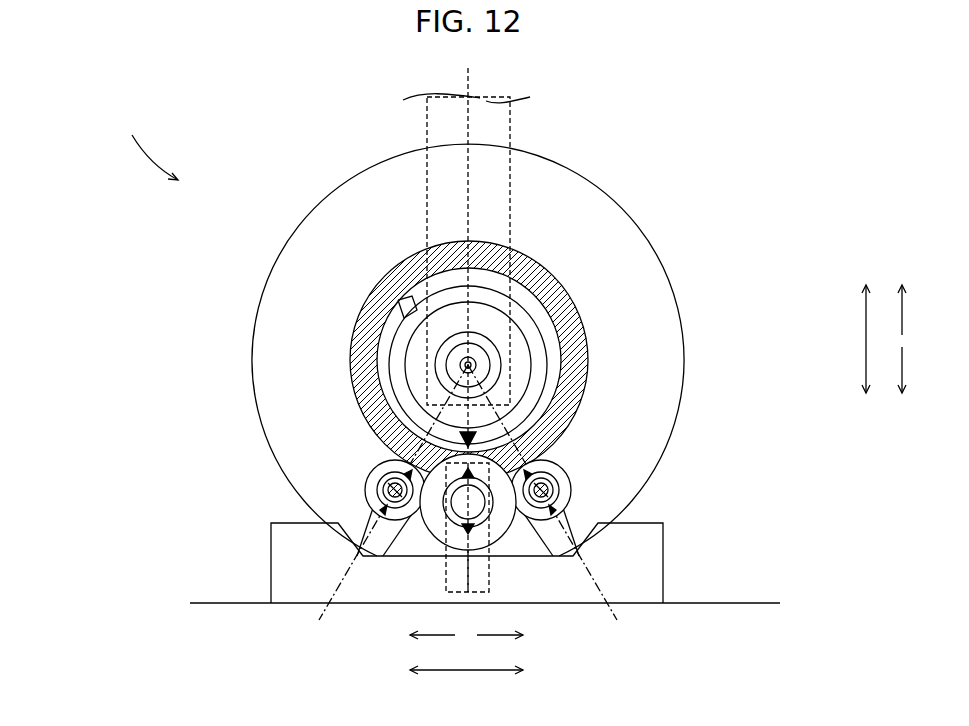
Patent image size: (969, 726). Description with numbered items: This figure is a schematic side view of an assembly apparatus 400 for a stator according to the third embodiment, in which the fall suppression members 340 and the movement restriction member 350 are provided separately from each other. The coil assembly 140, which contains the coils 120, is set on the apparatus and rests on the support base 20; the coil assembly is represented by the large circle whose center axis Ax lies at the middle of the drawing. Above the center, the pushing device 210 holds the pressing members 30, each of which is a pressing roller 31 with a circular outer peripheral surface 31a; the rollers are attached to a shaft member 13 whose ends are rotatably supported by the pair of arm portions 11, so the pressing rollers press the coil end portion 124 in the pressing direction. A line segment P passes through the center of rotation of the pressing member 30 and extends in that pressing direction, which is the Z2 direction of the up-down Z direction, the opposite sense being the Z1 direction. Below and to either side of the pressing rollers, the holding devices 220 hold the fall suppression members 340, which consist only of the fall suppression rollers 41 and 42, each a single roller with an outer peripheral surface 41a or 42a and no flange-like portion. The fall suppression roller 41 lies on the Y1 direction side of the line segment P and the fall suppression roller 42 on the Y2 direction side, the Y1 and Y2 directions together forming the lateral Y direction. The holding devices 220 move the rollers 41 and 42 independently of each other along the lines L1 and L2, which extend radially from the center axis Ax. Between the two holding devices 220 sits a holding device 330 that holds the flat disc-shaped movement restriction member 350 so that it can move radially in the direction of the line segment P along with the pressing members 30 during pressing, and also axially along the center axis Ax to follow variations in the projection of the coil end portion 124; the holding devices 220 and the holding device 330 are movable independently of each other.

The assembly apparatus 400 is at (134, 148).
The coil assembly 140 is at (278, 233).
The line segment P is at (466, 114).
The arm portions 11 is at (569, 251).
The pushing device 210 is at (509, 157).
The coils 120 is at (575, 344).
The coil end portion 124 is at (547, 253).
The pressing member 30 is at (302, 365).
The pressing roller 31 is at (393, 313).
The outer peripheral surface 31a is at (413, 285).
The shaft member 13 is at (440, 343).
The center axis Ax is at (468, 365).
The line L1 is at (384, 503).
The line L2 is at (548, 503).
The support base 20 is at (663, 563).
The holding devices 220 is at (345, 537).
The fall suppression roller 41 is at (243, 489).
The fall suppression members 340 is at (365, 478).
The outer peripheral surface 41a is at (372, 488).
The fall suppression roller 42 is at (572, 480).
The outer peripheral surface 42a is at (570, 492).
The movement restriction member 350 is at (433, 553).
The holding device 330 is at (493, 568).
The Y1 direction Y1 is at (434, 646).
The Y2 direction Y2 is at (499, 646).
The Y direction Y is at (466, 680).
The Z direction Z is at (860, 339).
The Z1 direction Z1 is at (890, 310).
The Z2 direction Z2 is at (890, 370).